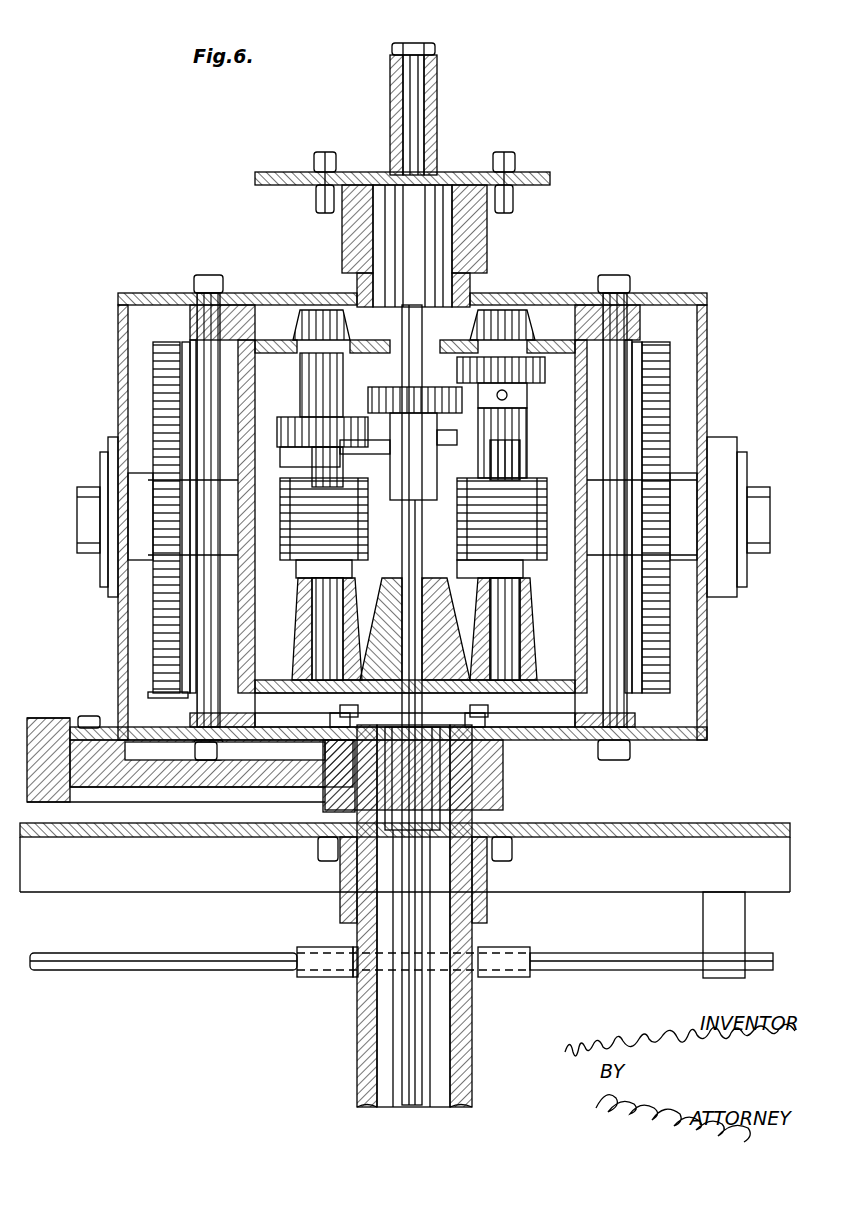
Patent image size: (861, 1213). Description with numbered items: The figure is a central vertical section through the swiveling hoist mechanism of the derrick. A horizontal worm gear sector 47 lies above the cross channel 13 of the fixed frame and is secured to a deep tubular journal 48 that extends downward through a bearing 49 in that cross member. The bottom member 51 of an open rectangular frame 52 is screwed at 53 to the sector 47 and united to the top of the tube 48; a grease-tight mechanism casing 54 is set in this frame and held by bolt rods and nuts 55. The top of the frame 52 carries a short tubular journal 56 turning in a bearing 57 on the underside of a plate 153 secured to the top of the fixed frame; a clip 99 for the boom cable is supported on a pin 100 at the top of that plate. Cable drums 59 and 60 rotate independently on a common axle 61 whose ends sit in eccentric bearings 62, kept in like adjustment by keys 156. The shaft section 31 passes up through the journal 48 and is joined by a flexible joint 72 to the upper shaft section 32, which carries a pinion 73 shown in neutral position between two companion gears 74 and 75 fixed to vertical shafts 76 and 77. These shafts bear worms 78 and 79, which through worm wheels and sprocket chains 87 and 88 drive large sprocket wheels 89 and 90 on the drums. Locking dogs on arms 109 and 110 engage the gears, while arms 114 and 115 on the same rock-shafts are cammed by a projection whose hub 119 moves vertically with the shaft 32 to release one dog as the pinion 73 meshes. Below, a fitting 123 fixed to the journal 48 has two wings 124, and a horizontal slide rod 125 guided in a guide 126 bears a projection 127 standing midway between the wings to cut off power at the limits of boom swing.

The cross channel 13 is at (695, 822).
The shaft section 31 is at (404, 1030).
The upper shaft section 32 is at (430, 708).
The worm gear sector 47 is at (40, 718).
The tubular journal 48 is at (472, 1040).
The bearing 49 is at (490, 876).
The bottom member 51 is at (565, 742).
The open rectangular frame 52 is at (707, 390).
The screw 53 is at (88, 716).
The mechanism casing 54 is at (640, 428).
The bolt rods and nuts 55 is at (617, 280).
The tubular journal 56 is at (470, 287).
The bearing 57 is at (488, 240).
The cable drum 59 is at (640, 360).
The cable drum 60 is at (190, 340).
The axle 61 is at (80, 505).
The eccentric bearing 62 is at (110, 596).
The flexible joint 72 is at (440, 790).
The pinion 73 is at (355, 394).
The gear 74 is at (548, 375).
The gear 75 is at (300, 448).
The vertical shaft 76 is at (522, 464).
The vertical shaft 77 is at (285, 486).
The worm 78 is at (543, 545).
The worm 79 is at (283, 538).
The sprocket chain 87 is at (662, 412).
The sprocket chain 88 is at (160, 412).
The sprocket wheel 89 is at (672, 674).
The sprocket wheel 90 is at (150, 660).
The clip 99 is at (438, 100).
The pin 100 is at (413, 130).
The arm 109 is at (360, 370).
The arm 110 is at (468, 420).
The arm 114 is at (343, 455).
The arm 115 is at (455, 490).
The hub 119 is at (396, 500).
The fitting 123 is at (350, 975).
The wing 124 is at (300, 975).
The slide rod 125 is at (233, 968).
The guide 126 is at (710, 914).
The projection 127 is at (475, 990).
The plate 153 is at (530, 172).
The key 156 is at (104, 560).